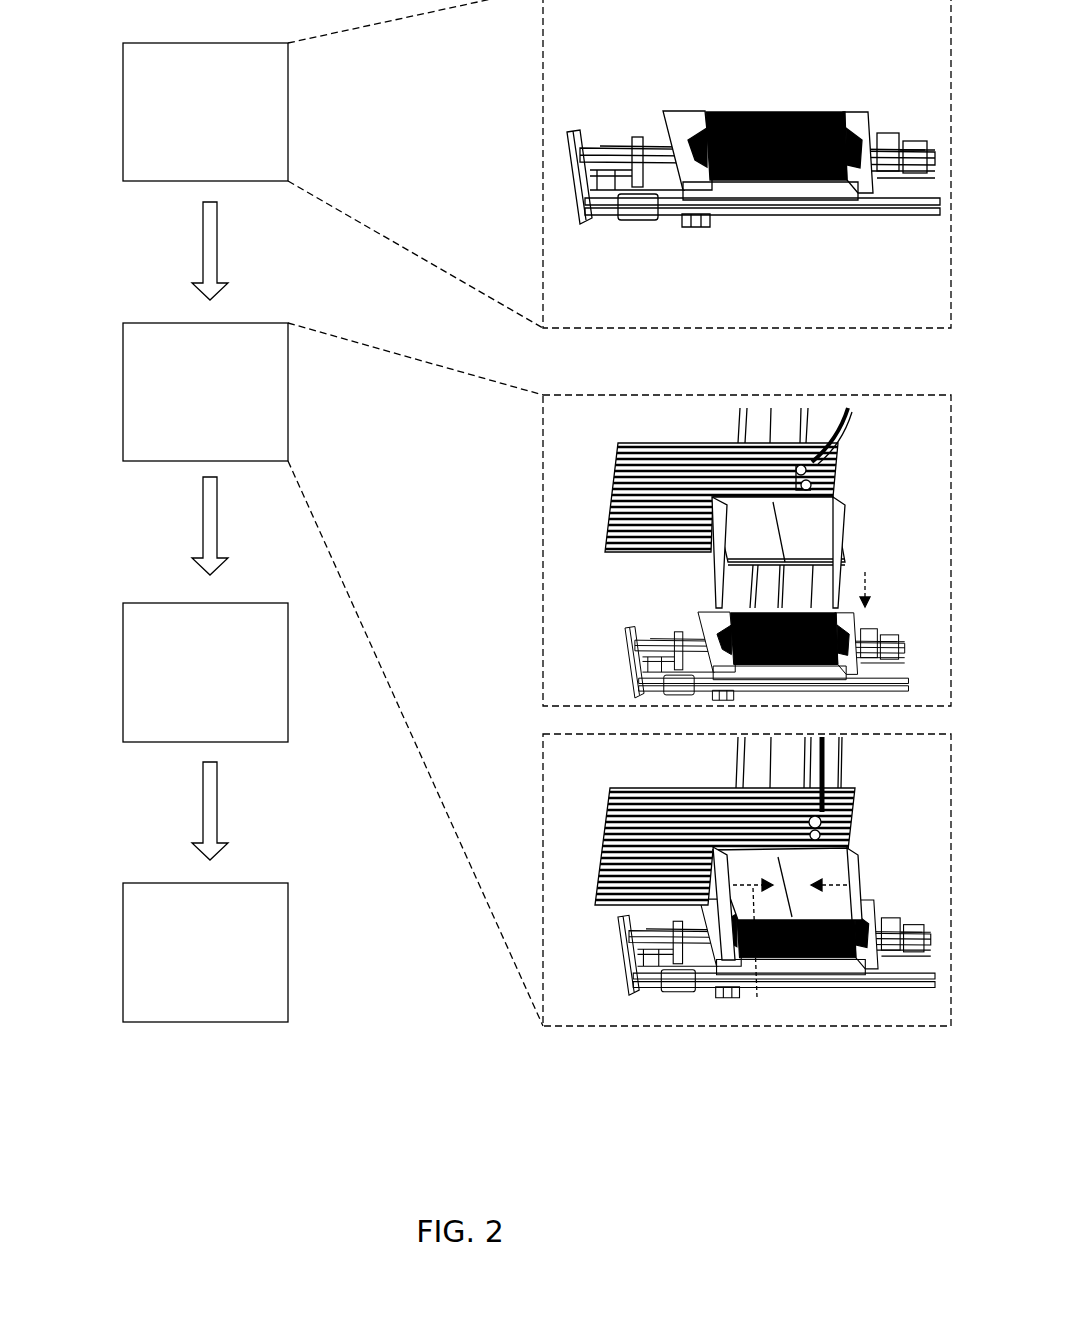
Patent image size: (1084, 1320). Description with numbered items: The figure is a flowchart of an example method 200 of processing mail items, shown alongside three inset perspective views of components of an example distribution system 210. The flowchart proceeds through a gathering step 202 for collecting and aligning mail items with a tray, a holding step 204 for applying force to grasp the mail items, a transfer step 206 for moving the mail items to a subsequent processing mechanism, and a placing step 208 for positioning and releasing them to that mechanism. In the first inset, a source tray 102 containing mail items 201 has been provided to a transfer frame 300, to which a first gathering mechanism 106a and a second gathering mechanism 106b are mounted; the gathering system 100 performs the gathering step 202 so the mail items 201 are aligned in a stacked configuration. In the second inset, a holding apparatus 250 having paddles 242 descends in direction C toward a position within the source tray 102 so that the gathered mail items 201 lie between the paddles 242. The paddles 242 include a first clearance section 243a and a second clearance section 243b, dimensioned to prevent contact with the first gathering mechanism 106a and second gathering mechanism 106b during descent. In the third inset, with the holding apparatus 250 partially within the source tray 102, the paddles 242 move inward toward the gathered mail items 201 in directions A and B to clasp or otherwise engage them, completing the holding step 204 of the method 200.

The method 200 is at (166, 582).
The gathering step 202 is at (123, 43).
The holding step 204 is at (123, 323).
The transfer step 206 is at (123, 603).
The placing step 208 is at (123, 883).
The distribution system 210 is at (578, 66).
The gathering system 100 is at (780, 170).
The source tray 102 is at (852, 197).
The first gathering mechanism 106a is at (858, 125).
The second gathering mechanism 106b is at (676, 118).
The mail items 201 is at (843, 110).
The paddles 242 is at (751, 684).
The first clearance section 243a is at (842, 557).
The second clearance section 243b is at (713, 556).
The holding apparatus 250 is at (849, 484).
The transfer frame 300 is at (905, 212).
The direction A is at (848, 883).
The direction B is at (755, 950).
The direction C is at (872, 590).